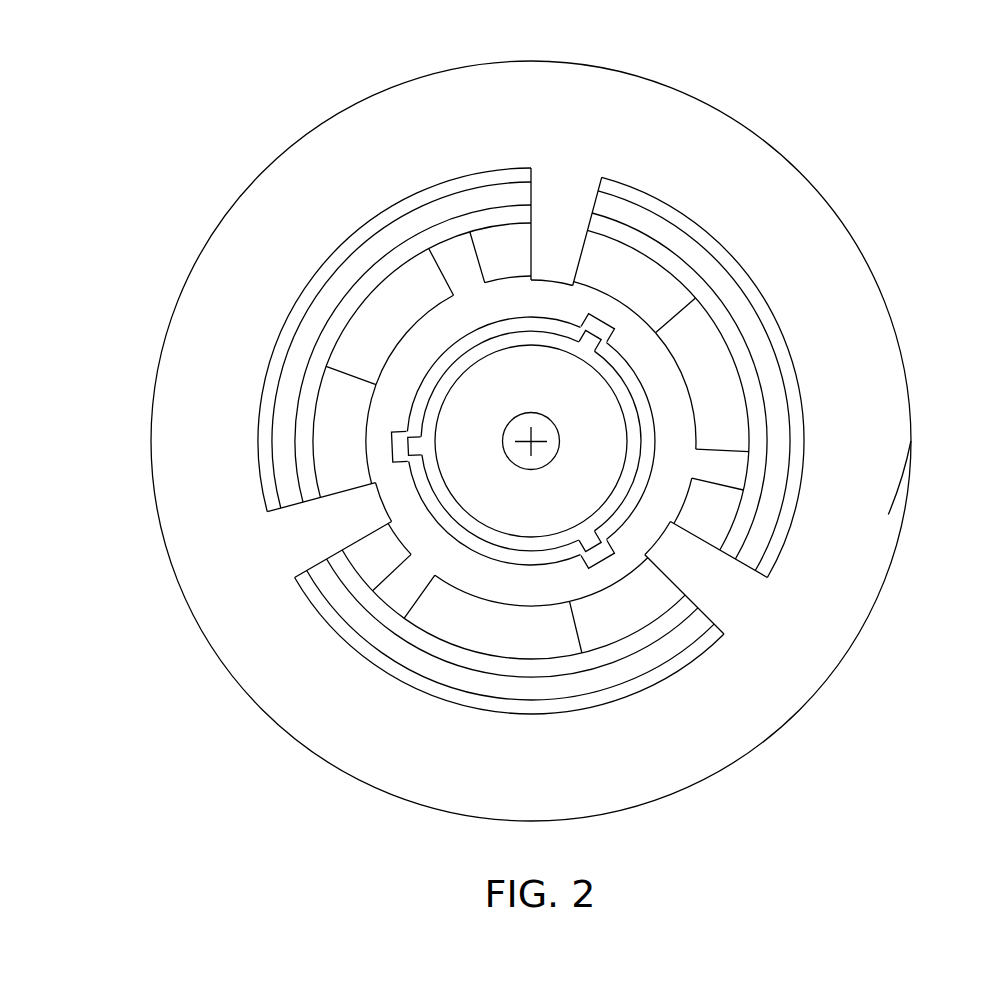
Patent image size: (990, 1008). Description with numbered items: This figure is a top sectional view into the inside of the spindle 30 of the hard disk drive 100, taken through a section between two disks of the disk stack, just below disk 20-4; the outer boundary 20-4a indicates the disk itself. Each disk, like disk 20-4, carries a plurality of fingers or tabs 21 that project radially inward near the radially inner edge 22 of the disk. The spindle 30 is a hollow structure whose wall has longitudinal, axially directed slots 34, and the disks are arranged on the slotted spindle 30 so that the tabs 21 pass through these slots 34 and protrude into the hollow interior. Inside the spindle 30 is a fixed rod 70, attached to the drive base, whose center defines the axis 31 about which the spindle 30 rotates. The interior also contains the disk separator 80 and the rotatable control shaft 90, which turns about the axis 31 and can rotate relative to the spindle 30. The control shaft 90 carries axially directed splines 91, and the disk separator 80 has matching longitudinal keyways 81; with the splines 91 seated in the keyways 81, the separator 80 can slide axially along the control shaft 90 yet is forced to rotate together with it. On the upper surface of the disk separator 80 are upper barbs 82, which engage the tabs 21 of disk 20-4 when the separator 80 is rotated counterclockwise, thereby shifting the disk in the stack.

The drive 100 is at (553, 27).
The disk 20-4 is at (855, 242).
The housing outer surface 20-4a is at (888, 475).
The radially inner edge 22 is at (793, 513).
The spindle 30 is at (783, 414).
The slots 34 is at (532, 193).
The tabs 21 is at (558, 263).
The upper barbs 82 is at (680, 312).
The disk separator 80 is at (652, 597).
The control shaft 90 is at (627, 473).
The keyways 81 is at (586, 322).
The splines 91 is at (610, 343).
The rod 70 is at (531, 413).
The axis 31 is at (525, 447).